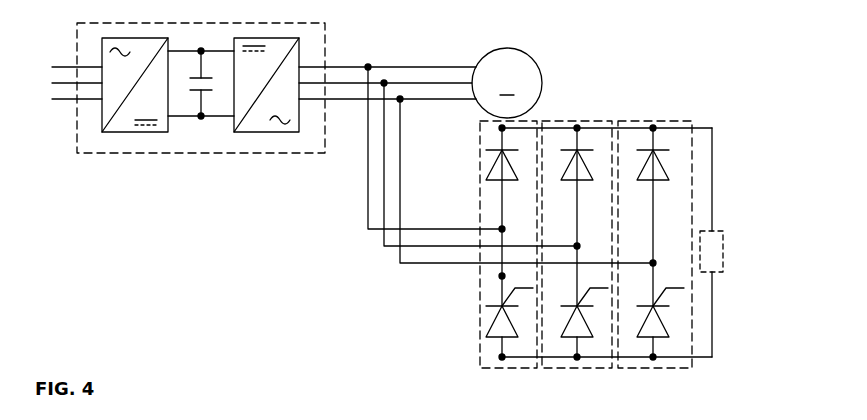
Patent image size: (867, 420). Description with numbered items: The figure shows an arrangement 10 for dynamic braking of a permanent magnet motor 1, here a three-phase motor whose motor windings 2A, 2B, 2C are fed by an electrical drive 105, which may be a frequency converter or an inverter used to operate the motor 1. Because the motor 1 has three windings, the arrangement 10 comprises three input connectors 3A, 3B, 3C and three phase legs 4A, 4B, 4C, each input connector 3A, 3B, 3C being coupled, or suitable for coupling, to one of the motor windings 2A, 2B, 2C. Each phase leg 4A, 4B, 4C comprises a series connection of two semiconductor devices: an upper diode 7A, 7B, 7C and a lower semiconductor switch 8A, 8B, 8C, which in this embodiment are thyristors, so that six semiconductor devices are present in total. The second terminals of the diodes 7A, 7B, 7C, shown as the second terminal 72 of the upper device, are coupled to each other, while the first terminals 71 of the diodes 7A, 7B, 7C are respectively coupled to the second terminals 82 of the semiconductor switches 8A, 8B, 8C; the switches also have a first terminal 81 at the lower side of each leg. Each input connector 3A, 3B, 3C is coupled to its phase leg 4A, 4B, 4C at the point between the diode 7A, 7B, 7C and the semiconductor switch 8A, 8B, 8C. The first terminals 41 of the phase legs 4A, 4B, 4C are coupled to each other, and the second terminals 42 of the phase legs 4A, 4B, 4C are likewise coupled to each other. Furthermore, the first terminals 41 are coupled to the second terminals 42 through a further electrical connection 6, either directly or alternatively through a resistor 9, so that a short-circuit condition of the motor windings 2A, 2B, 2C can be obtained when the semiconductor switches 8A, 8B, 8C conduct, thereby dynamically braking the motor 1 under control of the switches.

The electrical drive 105 is at (188, 118).
The motor winding 2A is at (387, 39).
The motor winding 2B is at (385, 47).
The motor winding 2C is at (395, 57).
The permanent magnet motor 1 is at (507, 83).
The input connector 3A is at (405, 146).
The input connector 3B is at (442, 163).
The input connector 3C is at (508, 204).
The first terminal of phase leg 41 is at (534, 86).
The second terminal of phase leg 42 is at (561, 379).
The phase leg 4A is at (474, 244).
The phase leg 4B is at (584, 221).
The phase leg 4C is at (657, 221).
The diode 7A is at (464, 217).
The diode 7B is at (585, 217).
The diode 7C is at (659, 217).
The semiconductor switch 8A is at (468, 322).
The semiconductor switch 8B is at (577, 311).
The semiconductor switch 8C is at (652, 311).
The first terminal of diode 71 is at (458, 214).
The second terminal of upper semiconductor device 72 is at (607, 112).
The first terminal of semiconductor switch 81 is at (561, 364).
The second terminal of semiconductor switch 82 is at (458, 283).
The further electrical connection 6 is at (735, 233).
The resistor 9 is at (736, 244).
The arrangement for dynamic braking 10 is at (741, 54).